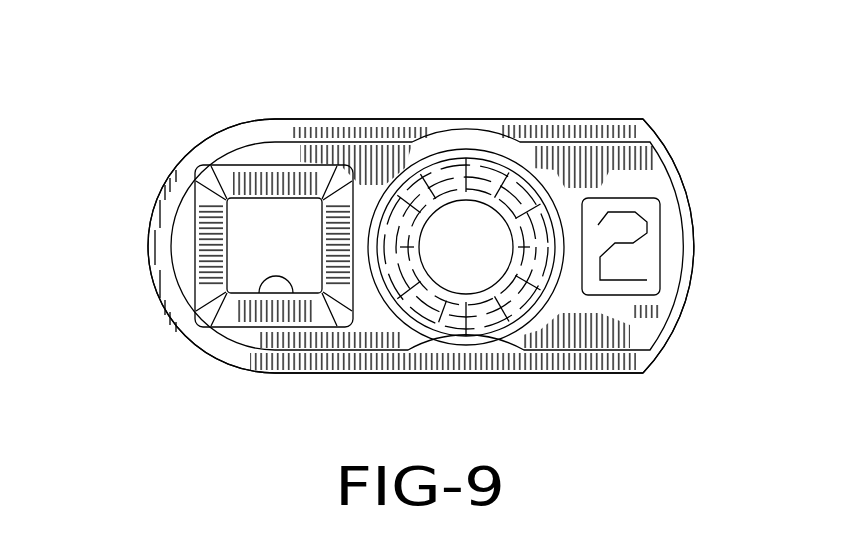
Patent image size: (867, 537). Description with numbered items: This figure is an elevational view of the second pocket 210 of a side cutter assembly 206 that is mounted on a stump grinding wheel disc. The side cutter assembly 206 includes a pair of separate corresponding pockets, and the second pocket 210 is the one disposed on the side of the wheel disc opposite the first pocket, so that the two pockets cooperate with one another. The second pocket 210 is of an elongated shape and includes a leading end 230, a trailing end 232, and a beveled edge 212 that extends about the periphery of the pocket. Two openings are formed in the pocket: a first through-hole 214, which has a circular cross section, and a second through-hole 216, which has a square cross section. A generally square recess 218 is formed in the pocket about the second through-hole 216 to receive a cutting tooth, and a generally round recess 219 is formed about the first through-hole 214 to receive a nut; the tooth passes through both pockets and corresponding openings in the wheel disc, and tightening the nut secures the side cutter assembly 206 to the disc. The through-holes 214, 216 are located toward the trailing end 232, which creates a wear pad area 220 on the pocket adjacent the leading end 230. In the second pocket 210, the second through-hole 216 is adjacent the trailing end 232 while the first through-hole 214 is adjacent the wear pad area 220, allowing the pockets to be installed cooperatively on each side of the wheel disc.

The side cutter assembly 206 is at (535, 118).
The second pocket 210 is at (608, 118).
The beveled edge 212 is at (640, 357).
The first through-hole 214 is at (419, 253).
The second through-hole 216 is at (260, 292).
The square recess 218 is at (245, 177).
The round recess 219 is at (422, 175).
The wear pad area 220 is at (612, 305).
The leading end 230 is at (695, 245).
The trailing end 232 is at (175, 313).